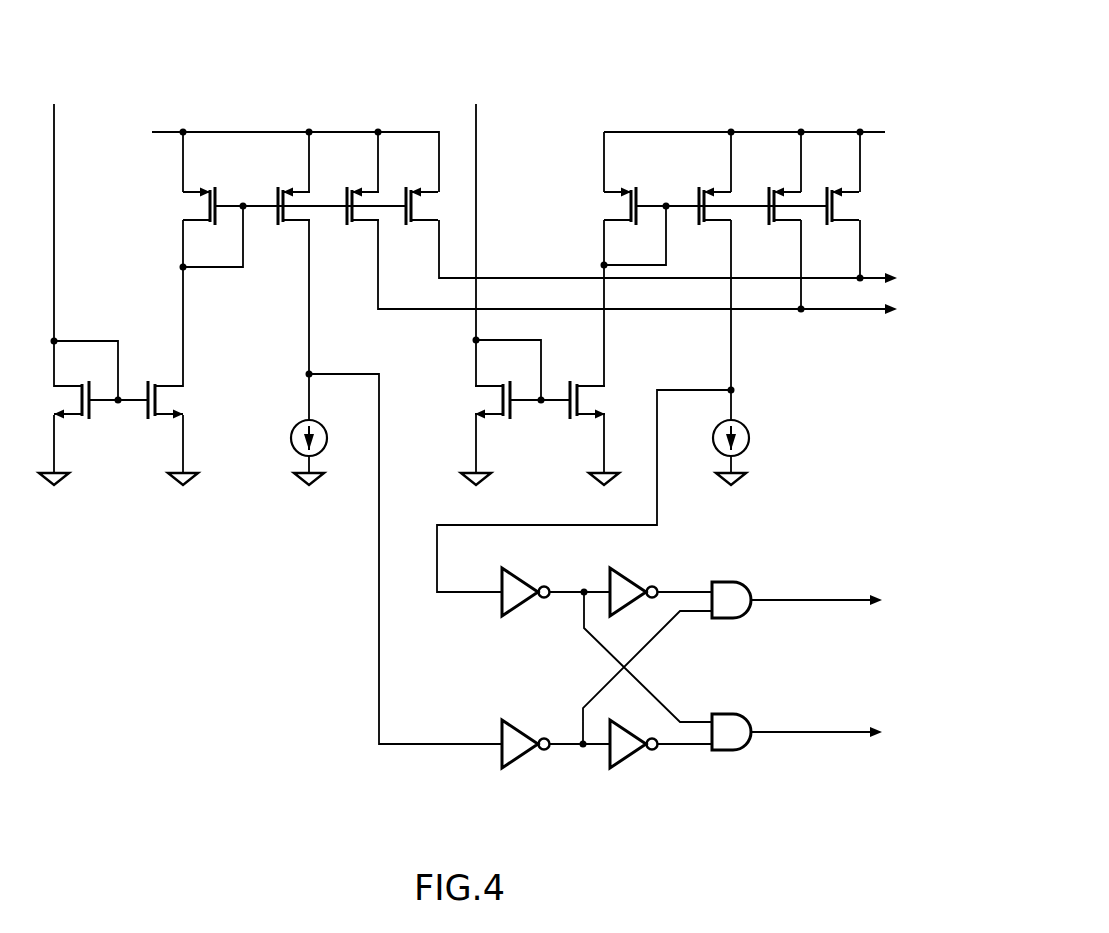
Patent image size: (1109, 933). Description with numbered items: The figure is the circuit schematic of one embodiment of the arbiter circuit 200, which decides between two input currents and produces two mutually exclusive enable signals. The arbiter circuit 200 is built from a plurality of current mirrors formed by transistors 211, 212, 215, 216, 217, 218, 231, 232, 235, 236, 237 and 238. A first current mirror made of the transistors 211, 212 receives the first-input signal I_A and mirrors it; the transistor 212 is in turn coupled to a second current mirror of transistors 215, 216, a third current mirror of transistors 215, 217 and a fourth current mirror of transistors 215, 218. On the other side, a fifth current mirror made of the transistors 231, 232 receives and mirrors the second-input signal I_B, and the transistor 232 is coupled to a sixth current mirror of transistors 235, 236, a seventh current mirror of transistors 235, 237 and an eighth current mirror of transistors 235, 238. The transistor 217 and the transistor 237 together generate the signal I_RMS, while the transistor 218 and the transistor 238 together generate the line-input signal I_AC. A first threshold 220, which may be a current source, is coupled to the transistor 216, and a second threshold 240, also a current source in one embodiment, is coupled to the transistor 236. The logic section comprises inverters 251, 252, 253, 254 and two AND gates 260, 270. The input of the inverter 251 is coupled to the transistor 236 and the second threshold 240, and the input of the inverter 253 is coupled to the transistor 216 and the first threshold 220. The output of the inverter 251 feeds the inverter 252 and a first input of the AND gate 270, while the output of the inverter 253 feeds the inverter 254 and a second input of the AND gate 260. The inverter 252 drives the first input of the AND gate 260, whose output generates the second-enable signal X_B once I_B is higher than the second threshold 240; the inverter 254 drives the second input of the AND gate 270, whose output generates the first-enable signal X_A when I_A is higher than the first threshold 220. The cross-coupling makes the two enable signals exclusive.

The arbiter circuit 200 is at (872, 34).
The transistor 211 is at (90, 383).
The transistor 212 is at (166, 384).
The transistor 215 is at (196, 192).
The transistor 216 is at (282, 194).
The transistor 217 is at (352, 190).
The transistor 218 is at (412, 190).
The first threshold 220 is at (292, 440).
The transistor 231 is at (500, 386).
The transistor 232 is at (592, 385).
The transistor 235 is at (616, 192).
The transistor 236 is at (704, 190).
The transistor 237 is at (774, 190).
The transistor 238 is at (833, 190).
The second threshold 240 is at (714, 441).
The inverter 251 is at (516, 608).
The inverter 252 is at (646, 620).
The inverter 253 is at (516, 760).
The inverter 254 is at (624, 760).
The AND gate 260 is at (733, 618).
The AND gate 270 is at (733, 750).